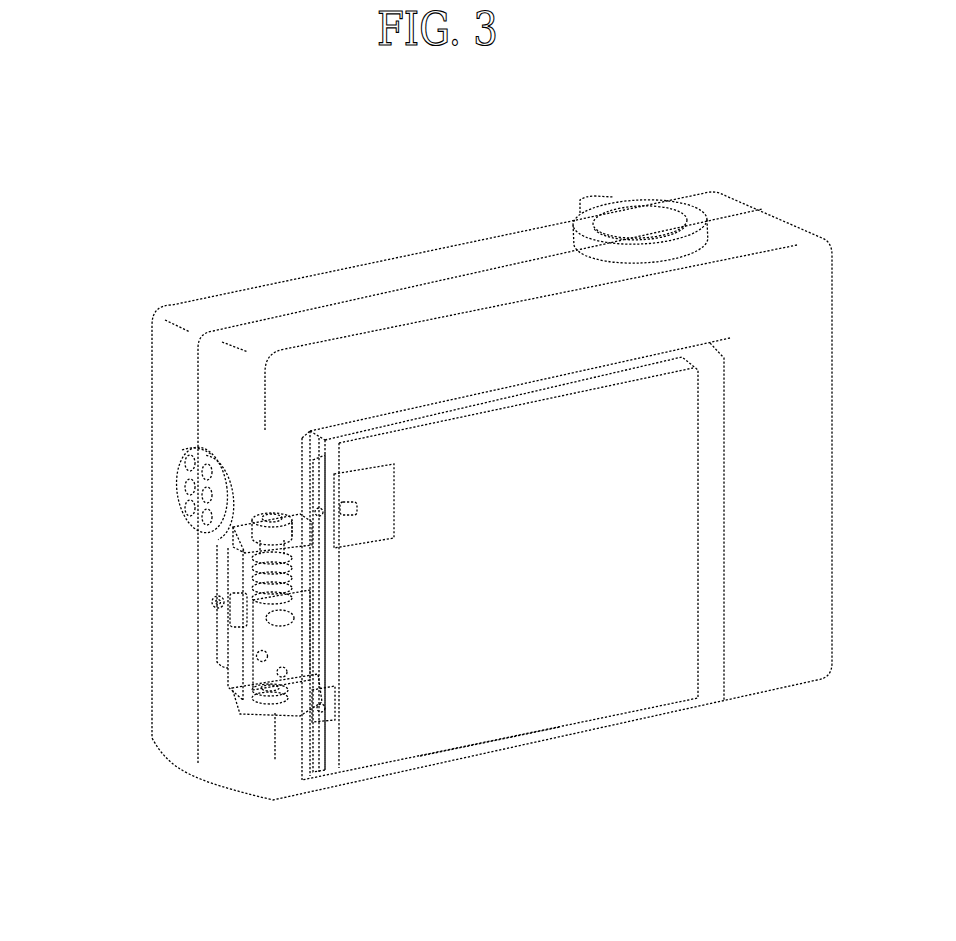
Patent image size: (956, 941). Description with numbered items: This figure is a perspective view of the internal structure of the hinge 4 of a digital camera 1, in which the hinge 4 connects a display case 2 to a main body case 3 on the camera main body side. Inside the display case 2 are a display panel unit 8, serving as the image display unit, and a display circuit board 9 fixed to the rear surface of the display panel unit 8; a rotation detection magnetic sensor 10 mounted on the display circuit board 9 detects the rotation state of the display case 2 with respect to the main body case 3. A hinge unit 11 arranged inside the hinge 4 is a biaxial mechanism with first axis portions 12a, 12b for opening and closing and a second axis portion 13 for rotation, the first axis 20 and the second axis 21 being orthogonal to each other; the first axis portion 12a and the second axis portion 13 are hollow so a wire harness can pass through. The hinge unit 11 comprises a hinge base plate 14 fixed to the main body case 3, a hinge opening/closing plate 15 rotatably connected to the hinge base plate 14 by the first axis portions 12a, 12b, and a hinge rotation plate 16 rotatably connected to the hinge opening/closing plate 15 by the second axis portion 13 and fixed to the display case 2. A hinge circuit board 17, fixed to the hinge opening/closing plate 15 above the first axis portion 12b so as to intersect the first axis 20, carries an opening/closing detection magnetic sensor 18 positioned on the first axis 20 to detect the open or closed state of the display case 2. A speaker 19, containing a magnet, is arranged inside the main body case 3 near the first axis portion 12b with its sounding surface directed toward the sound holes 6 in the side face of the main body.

The digital camera 1 is at (640, 190).
The display case 2 is at (615, 723).
The main body case 3 is at (773, 672).
The hinge 4 is at (270, 723).
The sound holes 6 is at (178, 490).
The display panel unit 8 is at (487, 742).
The display circuit board 9 is at (382, 493).
The rotation detection magnetic sensor 10 is at (357, 510).
The hinge unit 11 is at (250, 700).
The first axis portion 12a is at (293, 713).
The first axis portion 12b is at (262, 547).
The second axis portion 13 is at (212, 605).
The hinge base plate 14 is at (250, 657).
The hinge opening/closing plate 15 is at (332, 703).
The hinge rotation plate 16 is at (325, 672).
The hinge circuit board 17 is at (288, 518).
The opening/closing detection magnetic sensor 18 is at (255, 515).
The speaker 19 is at (168, 445).
The first axis 20 is at (270, 513).
The second axis 21 is at (267, 620).